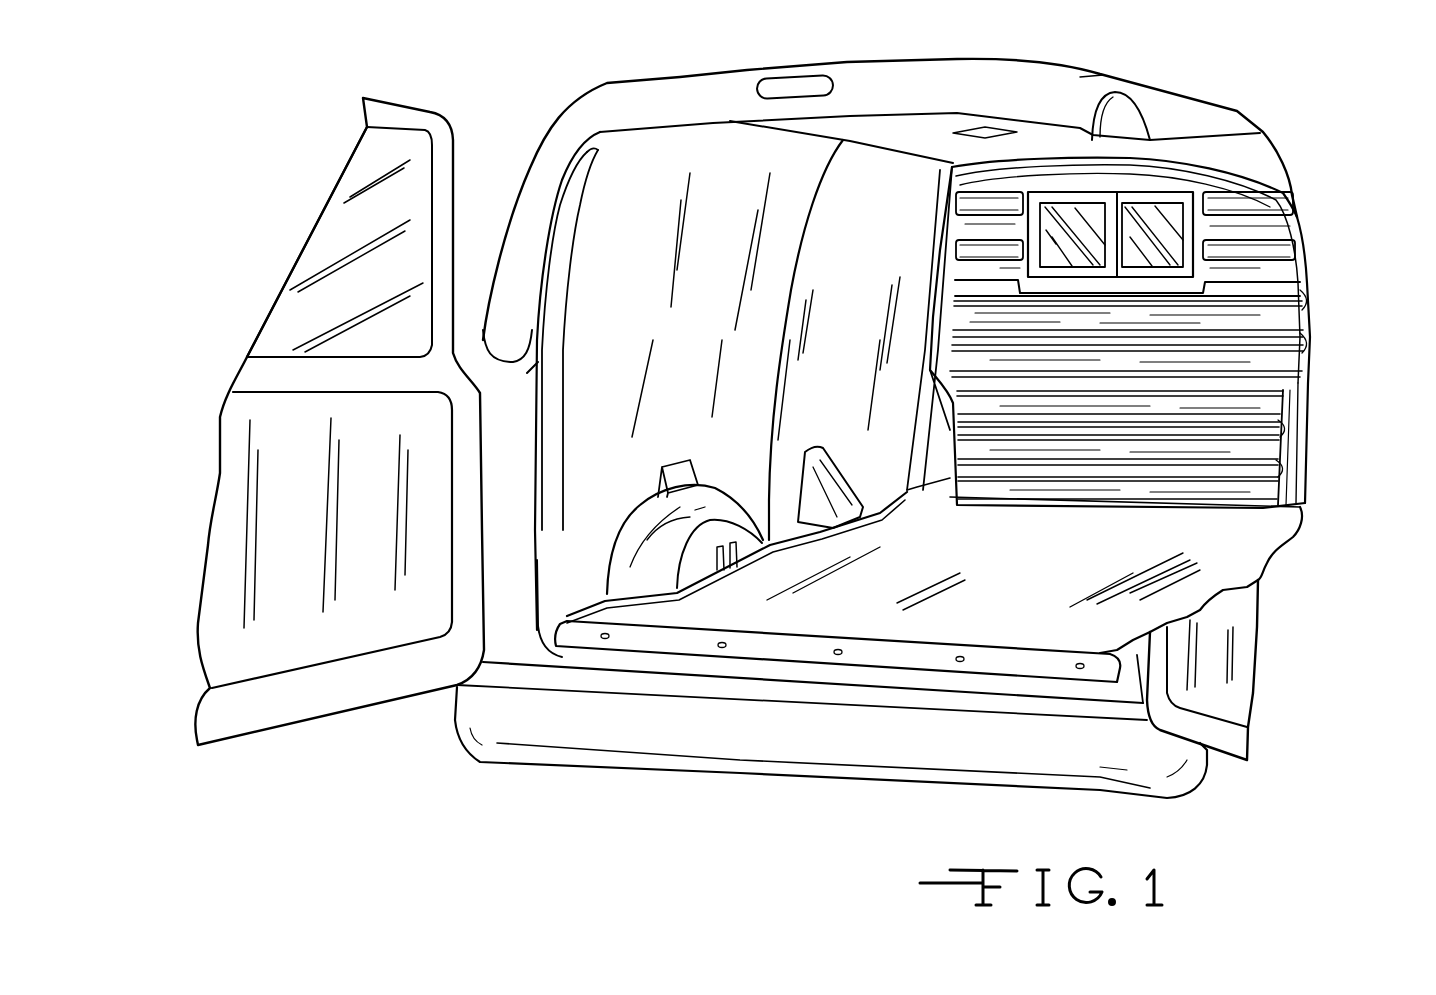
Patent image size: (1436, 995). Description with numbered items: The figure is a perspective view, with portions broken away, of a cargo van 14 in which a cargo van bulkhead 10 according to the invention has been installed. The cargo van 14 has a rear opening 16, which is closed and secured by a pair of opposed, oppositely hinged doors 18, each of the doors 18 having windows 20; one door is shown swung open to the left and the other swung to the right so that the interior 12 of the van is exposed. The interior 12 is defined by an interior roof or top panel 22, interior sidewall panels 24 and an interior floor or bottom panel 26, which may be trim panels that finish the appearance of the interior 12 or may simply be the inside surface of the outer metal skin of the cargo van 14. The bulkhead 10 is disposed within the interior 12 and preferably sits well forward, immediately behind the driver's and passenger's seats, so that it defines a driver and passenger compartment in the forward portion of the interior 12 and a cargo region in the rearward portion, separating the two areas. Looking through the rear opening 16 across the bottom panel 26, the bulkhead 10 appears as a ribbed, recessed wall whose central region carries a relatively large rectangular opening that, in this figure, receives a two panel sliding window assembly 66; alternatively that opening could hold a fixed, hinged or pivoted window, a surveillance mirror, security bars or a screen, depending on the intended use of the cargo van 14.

The cargo van bulkhead 10 is at (982, 515).
The interior 12 is at (866, 350).
The cargo van 14 is at (640, 81).
The rear opening 16 is at (738, 116).
The doors 18 is at (318, 688).
The windows 20 is at (325, 248).
The interior roof or top panel 22 is at (1250, 153).
The interior sidewall panels 24 is at (812, 256).
The interior floor or bottom panel 26 is at (1108, 572).
The two panel sliding window assembly 66 is at (1107, 237).